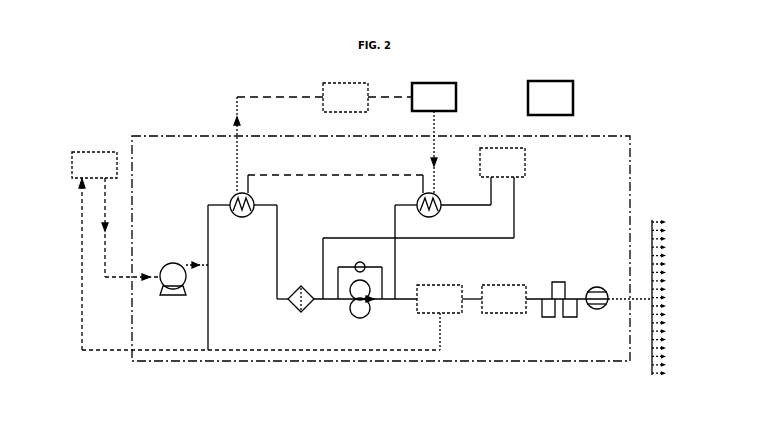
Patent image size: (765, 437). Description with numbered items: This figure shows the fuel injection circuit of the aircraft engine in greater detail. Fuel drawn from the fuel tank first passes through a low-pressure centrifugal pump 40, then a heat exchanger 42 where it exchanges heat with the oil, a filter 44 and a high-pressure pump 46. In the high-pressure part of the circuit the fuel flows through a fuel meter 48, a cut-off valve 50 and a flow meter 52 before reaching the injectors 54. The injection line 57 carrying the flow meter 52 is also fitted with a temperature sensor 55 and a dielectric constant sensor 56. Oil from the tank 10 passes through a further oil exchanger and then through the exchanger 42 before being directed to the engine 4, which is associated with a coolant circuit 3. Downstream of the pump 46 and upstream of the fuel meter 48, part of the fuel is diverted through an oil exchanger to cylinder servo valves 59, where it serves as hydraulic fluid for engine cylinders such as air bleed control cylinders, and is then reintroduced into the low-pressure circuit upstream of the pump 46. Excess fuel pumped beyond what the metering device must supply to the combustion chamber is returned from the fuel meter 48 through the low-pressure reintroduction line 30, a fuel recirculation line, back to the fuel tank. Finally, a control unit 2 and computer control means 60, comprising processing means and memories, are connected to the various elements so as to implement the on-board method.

The control unit 2 is at (98, 171).
The coolant circuit 3 is at (384, 164).
The engine 4 is at (434, 138).
The tank 10 is at (324, 97).
The reintroduction line 30 is at (106, 350).
The low-pressure centrifugal pump 40 is at (173, 261).
The heat exchanger 42 is at (243, 224).
The filter 44 is at (318, 312).
The high-pressure pump 46 is at (380, 310).
The fuel meter 48 is at (439, 317).
The cut-off valve 50 is at (504, 299).
The flow meter 52 is at (597, 312).
The injectors 54 is at (548, 317).
The temperature sensor 55 is at (556, 282).
The dielectric constant sensor 56 is at (446, 212).
The injection line 57 is at (620, 296).
The cylinder servo valves 59 is at (502, 193).
The computer control means 60 is at (550, 98).